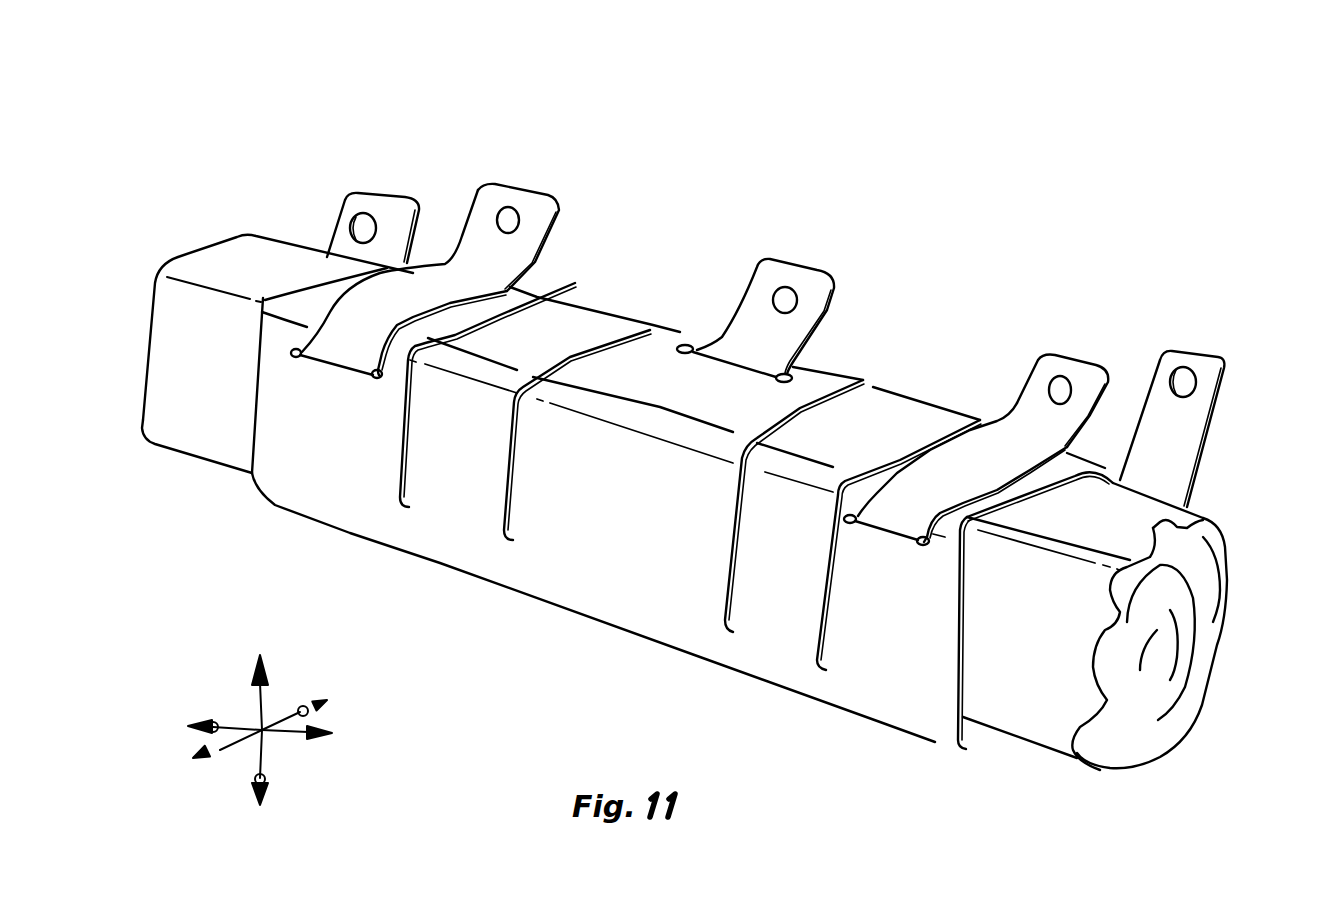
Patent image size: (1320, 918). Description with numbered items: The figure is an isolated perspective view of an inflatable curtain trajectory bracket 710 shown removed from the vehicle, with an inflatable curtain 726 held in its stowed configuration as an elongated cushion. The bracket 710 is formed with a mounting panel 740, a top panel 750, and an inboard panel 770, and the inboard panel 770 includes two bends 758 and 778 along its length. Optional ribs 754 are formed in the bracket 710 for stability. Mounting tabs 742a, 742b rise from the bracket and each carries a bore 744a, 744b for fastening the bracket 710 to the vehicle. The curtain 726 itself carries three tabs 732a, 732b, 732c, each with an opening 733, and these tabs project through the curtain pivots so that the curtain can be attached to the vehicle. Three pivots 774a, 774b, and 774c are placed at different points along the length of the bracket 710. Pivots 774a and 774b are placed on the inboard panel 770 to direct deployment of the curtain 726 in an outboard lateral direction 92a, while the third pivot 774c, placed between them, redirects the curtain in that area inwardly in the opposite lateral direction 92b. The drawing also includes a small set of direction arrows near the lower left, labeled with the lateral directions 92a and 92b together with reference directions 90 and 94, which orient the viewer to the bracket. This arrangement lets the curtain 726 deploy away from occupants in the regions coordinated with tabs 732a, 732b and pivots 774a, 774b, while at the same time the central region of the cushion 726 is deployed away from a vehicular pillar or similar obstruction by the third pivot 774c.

The inflatable curtain trajectory bracket 710 is at (882, 287).
The inflatable curtain 726 is at (1147, 713).
The tab 732a is at (1110, 388).
The tab 732b is at (553, 213).
The tab 732c is at (813, 291).
The opening 733 is at (508, 208).
The mounting panel 740 is at (1003, 495).
The mounting tab 742a is at (1187, 353).
The mounting tab 742b is at (371, 207).
The bore 744a is at (1196, 385).
The bore 744b is at (357, 220).
The top panel 750 is at (1218, 560).
The rib 754 is at (543, 300).
The bend 758 is at (617, 413).
The inboard panel 770 is at (900, 697).
The pivot 774a is at (850, 524).
The pivot 774b is at (291, 351).
The pivot 774c is at (802, 361).
The bend 778 is at (770, 630).
The vertical axis 90 is at (262, 755).
The outboard lateral direction 92a is at (283, 707).
The lateral direction 92b is at (233, 748).
The lateral axis 94 is at (243, 723).